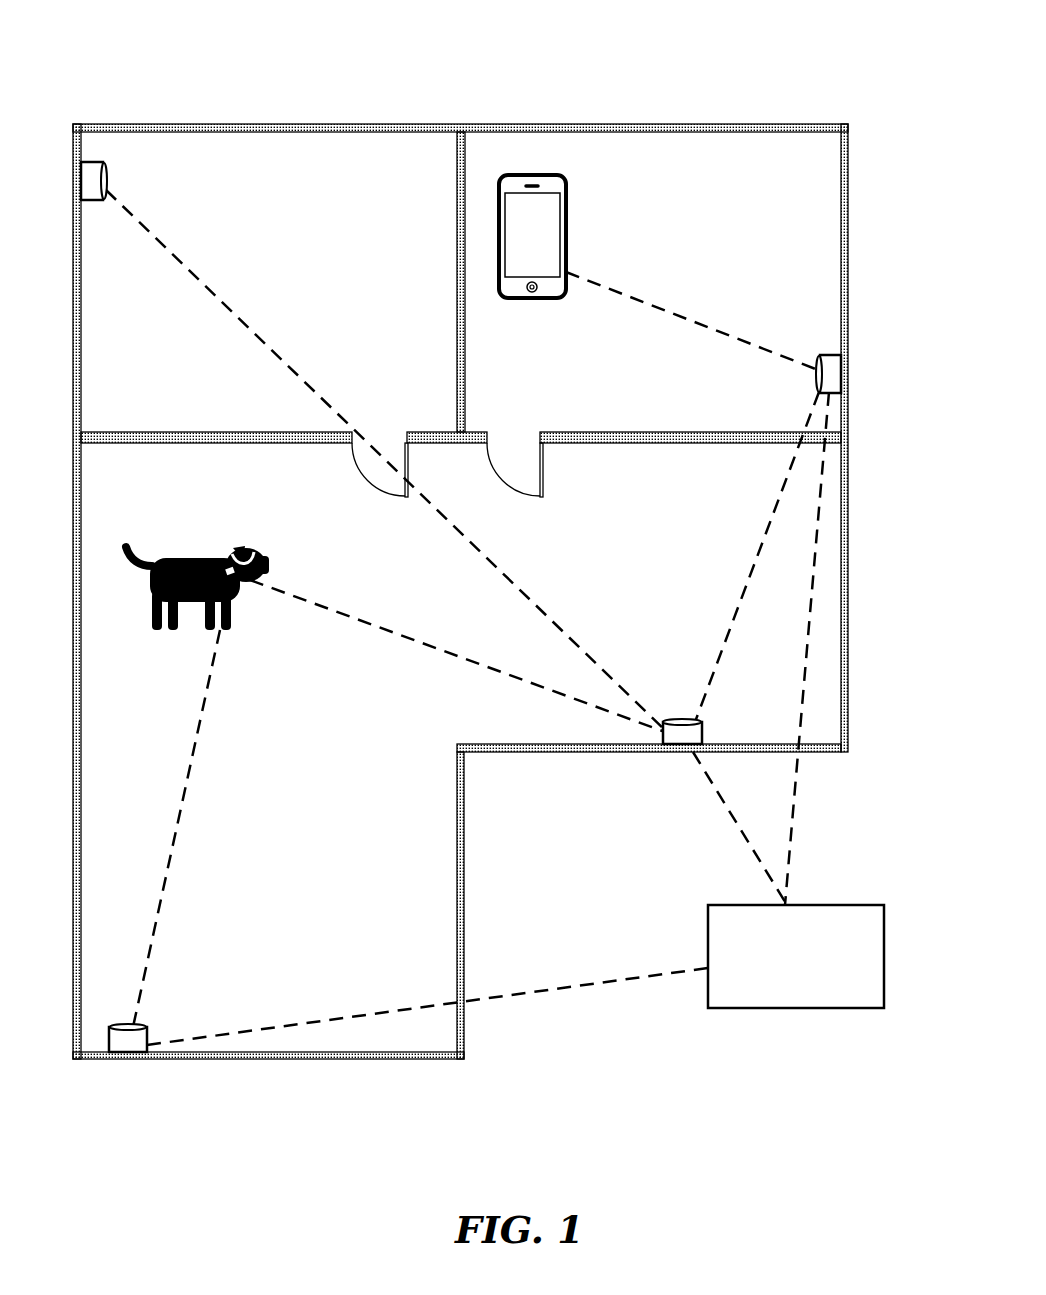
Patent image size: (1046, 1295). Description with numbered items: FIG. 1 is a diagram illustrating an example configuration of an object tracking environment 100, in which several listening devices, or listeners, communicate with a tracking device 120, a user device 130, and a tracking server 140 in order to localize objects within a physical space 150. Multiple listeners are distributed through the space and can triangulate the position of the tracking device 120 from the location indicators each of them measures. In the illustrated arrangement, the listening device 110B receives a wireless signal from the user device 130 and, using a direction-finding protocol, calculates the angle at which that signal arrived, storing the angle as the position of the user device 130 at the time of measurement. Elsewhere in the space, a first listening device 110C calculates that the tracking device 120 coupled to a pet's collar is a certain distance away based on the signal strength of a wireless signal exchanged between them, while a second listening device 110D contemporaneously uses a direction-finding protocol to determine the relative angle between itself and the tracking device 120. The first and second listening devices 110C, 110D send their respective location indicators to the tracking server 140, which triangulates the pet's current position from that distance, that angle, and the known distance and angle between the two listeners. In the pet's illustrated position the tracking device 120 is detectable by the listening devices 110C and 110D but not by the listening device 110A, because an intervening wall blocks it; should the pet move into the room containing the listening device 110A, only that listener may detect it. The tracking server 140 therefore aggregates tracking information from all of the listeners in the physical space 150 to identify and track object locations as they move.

The object tracking environment 100 is at (700, 57).
The listening device 110A is at (106, 185).
The listening device 110B is at (822, 357).
The first listening device 110C is at (676, 722).
The second listening device 110D is at (147, 1035).
The tracking device 120 is at (218, 553).
The user device 130 is at (561, 230).
The tracking server 140 is at (796, 956).
The physical space 150 is at (848, 170).